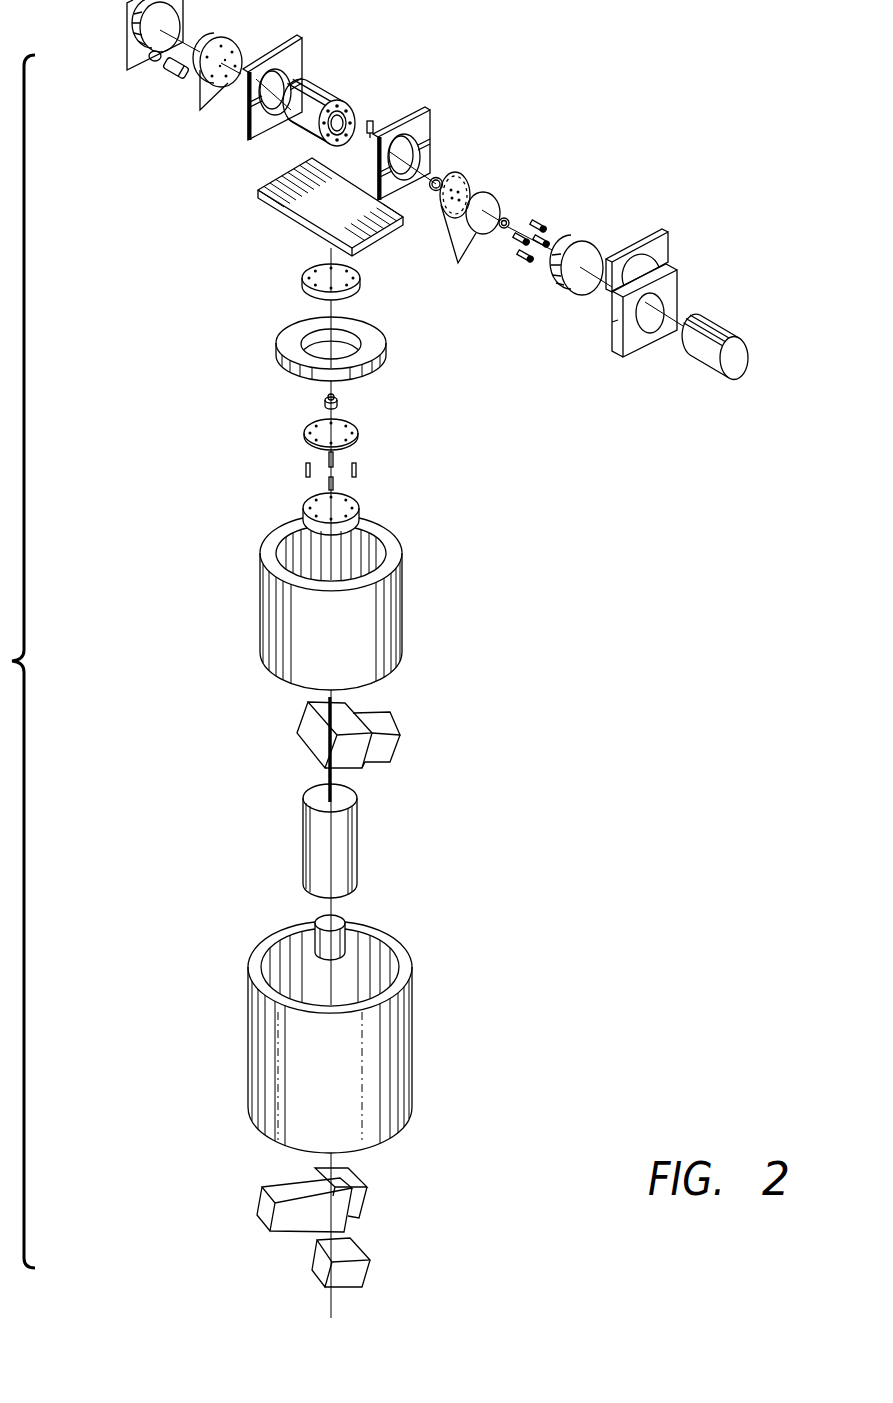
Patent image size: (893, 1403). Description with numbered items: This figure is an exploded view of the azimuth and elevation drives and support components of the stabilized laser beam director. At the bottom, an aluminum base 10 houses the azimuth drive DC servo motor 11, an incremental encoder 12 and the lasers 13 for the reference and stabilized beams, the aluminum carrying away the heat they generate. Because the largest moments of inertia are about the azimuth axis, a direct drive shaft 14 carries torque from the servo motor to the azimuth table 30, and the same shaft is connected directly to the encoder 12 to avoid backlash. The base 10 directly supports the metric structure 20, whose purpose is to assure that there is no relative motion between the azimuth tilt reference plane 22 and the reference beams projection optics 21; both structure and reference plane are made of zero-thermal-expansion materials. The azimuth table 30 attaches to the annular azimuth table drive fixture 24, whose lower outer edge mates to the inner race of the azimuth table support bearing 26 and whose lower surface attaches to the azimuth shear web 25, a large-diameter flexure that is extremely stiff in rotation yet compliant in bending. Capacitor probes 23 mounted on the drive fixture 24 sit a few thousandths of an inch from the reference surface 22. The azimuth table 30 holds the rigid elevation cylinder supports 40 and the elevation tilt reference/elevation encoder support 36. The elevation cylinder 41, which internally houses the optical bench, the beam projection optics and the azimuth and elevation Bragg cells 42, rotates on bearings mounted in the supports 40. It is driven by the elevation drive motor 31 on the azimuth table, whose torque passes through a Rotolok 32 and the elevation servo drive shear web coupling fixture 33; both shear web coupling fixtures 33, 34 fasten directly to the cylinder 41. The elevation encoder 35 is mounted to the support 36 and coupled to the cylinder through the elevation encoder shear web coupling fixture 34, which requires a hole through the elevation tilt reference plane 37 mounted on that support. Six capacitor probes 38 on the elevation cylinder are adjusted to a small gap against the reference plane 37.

The base 10 is at (412, 1005).
The azimuth drive DC servo motor 11 is at (303, 843).
The incremental encoder 12 is at (357, 918).
The lasers 13 is at (268, 58).
The direct drive shaft 14 is at (333, 776).
The metric structure 20 is at (403, 588).
The reference beams projection optics 21 is at (298, 724).
The azimuth tilt reference plane 22 is at (305, 506).
The capacitor probes 23 is at (357, 473).
The azimuth table drive fixture 24 is at (302, 284).
The azimuth shear web 25 is at (305, 428).
The azimuth table support bearing 26 is at (386, 348).
The azimuth table 30 is at (262, 203).
The elevation drive motor 31 is at (167, 77).
The Rotolok 32 is at (125, 52).
The elevation servo drive shear web coupling fixture 33 is at (213, 84).
The elevation encoder shear web coupling fixture 34 is at (462, 172).
The elevation encoder 35 is at (708, 375).
The elevation tilt reference/elevation encoder support 36 is at (678, 270).
The elevation tilt reference plane 37 is at (585, 243).
The capacitor probes 38 is at (527, 223).
The elevation cylinder support 40 is at (252, 93).
The elevation cylinder 41 is at (328, 87).
The azimuth and elevation Bragg cells 42 is at (370, 125).